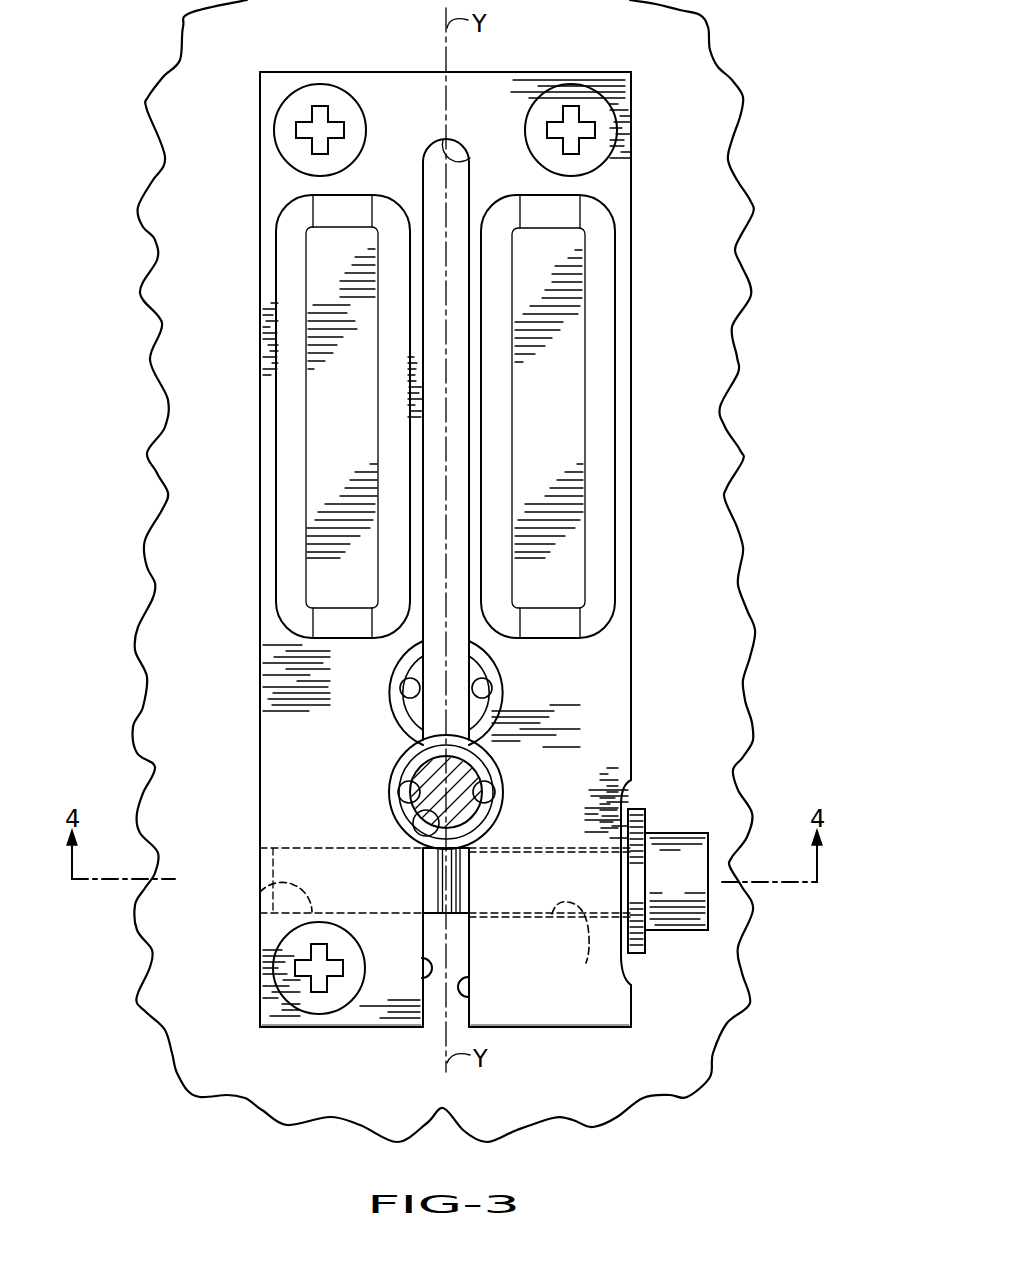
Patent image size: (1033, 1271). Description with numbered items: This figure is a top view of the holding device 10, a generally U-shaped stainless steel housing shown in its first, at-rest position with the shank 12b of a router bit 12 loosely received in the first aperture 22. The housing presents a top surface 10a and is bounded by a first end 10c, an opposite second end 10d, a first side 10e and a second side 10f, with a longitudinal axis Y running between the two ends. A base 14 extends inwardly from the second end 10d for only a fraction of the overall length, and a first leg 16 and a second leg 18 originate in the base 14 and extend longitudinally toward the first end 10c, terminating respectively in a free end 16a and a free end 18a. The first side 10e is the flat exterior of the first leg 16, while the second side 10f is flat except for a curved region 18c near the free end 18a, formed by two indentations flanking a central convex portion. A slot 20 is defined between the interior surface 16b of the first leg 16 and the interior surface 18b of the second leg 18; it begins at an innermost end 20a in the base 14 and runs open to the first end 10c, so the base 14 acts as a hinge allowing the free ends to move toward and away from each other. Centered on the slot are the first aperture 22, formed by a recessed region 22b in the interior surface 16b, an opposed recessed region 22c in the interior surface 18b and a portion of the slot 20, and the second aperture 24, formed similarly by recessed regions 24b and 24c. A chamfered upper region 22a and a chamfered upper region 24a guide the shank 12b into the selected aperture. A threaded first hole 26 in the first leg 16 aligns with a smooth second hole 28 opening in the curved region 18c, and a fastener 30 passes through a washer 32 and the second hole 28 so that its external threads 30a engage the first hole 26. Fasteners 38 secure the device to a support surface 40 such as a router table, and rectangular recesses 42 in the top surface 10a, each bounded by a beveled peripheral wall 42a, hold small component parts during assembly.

The holding device 10 is at (484, 553).
The top surface 10a is at (358, 836).
The first end 10c is at (284, 1028).
The second end 10d is at (355, 72).
The first side 10e is at (260, 195).
The second side 10f is at (632, 195).
The router bit 12 is at (493, 799).
The shank 12b is at (485, 752).
The base 14 is at (425, 107).
The first leg 16 is at (298, 901).
The free end 16a is at (360, 1022).
The interior surface 16b is at (415, 978).
The second leg 18 is at (641, 899).
The free end 18a is at (532, 1022).
The interior surface 18b is at (470, 992).
The curved region 18c is at (630, 868).
The slot 20 is at (411, 594).
The innermost end 20a is at (467, 155).
The first aperture 22 is at (442, 808).
The chamfered upper region 22a is at (393, 790).
The recessed region 22b is at (432, 838).
The recessed region 22c is at (493, 800).
The second aperture 24 is at (452, 693).
The chamfered upper region 24a is at (404, 719).
The recessed region 24b is at (400, 697).
The recessed region 24c is at (492, 688).
The first hole 26 is at (258, 893).
The second hole 28 is at (576, 946).
The fastener 30 is at (685, 930).
The external threads 30a is at (438, 895).
The washer 32 is at (648, 818).
The fastener 38 is at (303, 105).
The support surface 40 is at (224, 558).
The recess 42 is at (446, 416).
The beveled peripheral wall 42a is at (290, 320).